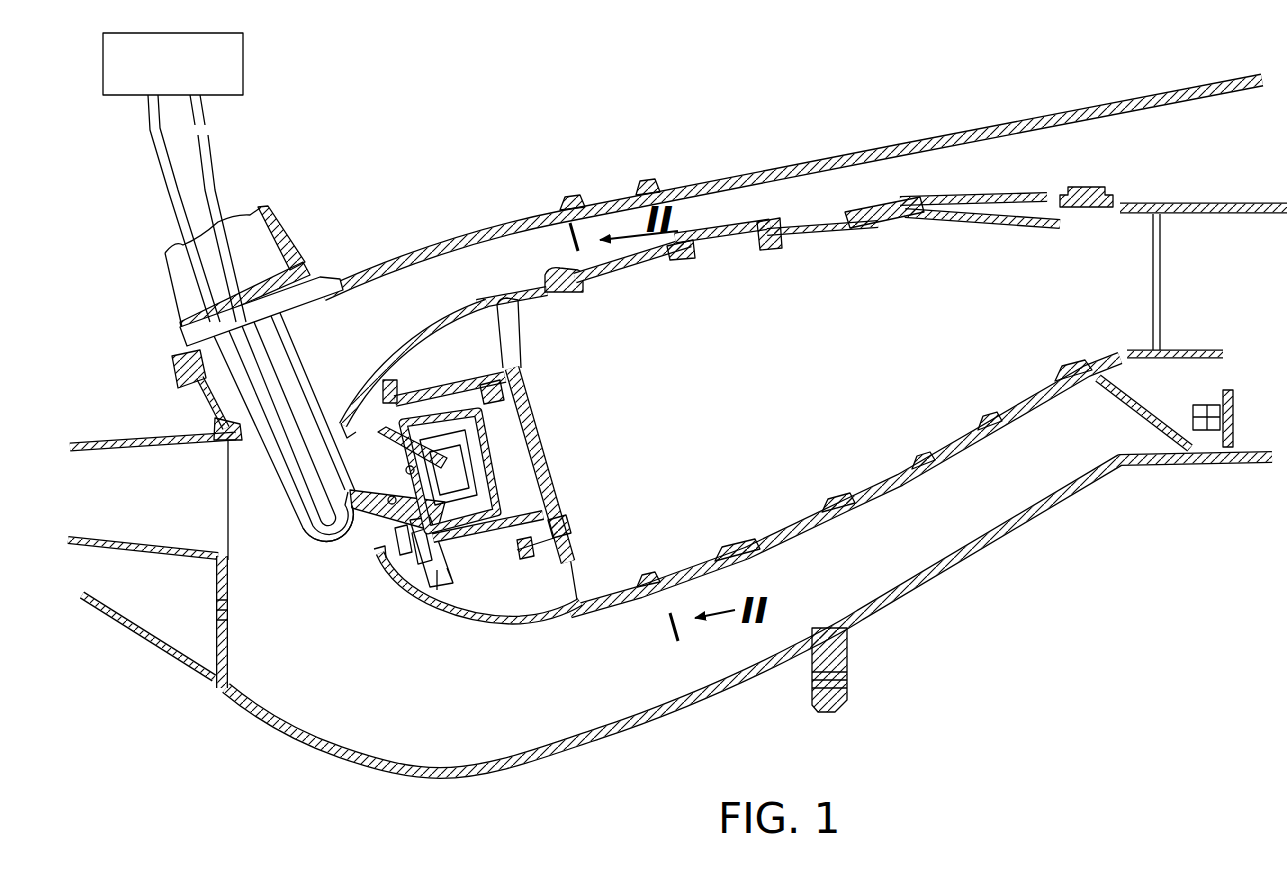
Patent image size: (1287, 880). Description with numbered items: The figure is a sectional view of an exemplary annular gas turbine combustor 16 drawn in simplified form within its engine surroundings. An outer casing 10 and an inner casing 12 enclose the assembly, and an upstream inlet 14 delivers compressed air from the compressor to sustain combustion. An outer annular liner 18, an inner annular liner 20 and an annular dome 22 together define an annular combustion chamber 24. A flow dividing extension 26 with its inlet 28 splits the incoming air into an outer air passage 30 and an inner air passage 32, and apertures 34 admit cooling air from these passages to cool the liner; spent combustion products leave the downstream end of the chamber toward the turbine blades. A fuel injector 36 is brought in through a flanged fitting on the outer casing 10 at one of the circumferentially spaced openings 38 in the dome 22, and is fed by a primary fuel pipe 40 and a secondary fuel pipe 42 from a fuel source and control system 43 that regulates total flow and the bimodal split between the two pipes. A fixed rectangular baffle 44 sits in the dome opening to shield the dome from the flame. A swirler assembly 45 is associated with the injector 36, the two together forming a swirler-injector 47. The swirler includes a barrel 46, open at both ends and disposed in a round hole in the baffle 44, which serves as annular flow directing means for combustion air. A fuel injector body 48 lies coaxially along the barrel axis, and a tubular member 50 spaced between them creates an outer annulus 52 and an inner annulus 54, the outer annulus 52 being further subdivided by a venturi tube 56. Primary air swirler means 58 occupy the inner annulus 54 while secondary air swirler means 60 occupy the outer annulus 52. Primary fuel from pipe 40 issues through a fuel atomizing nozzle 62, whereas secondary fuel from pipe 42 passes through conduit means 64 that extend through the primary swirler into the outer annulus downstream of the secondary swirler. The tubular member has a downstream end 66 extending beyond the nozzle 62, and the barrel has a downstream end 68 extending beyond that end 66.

The outer casing 10 is at (893, 135).
The inner casing 12 is at (680, 714).
The upstream inlet 14 is at (100, 453).
The gas turbine combustor 16 is at (992, 186).
The outer annular liner 18 is at (718, 236).
The inner annular liner 20 is at (820, 540).
The annular dome 22 is at (572, 592).
The annular combustion chamber 24 is at (727, 403).
The flow dividing extension 26 is at (384, 360).
The inlet 28 is at (343, 411).
The outer air passage 30 is at (527, 265).
The inner air passage 32 is at (659, 682).
The apertures 34 is at (760, 578).
The fuel injector 36 is at (285, 453).
The circumferentially spaced openings 38 is at (510, 552).
The primary fuel pipe 40 is at (151, 153).
The secondary fuel pipe 42 is at (210, 153).
The fuel source and control system 43 is at (178, 78).
The baffle 44 is at (512, 356).
The swirler assembly 45 is at (457, 570).
The barrel 46 is at (449, 395).
The swirler-injector 47 is at (293, 528).
The fuel injector body 48 is at (360, 549).
The tubular member 50 is at (398, 545).
The outer annulus 52 is at (504, 398).
The inner annulus 54 is at (500, 418).
The venturi tube 56 is at (545, 516).
The primary air swirler means 58 is at (405, 522).
The secondary air swirler means 60 is at (408, 562).
The fuel atomizing nozzle 62 is at (478, 455).
The conduit means 64 is at (393, 463).
The downstream end of tubular member 66 is at (472, 480).
The downstream end of flow directing means 68 is at (560, 528).